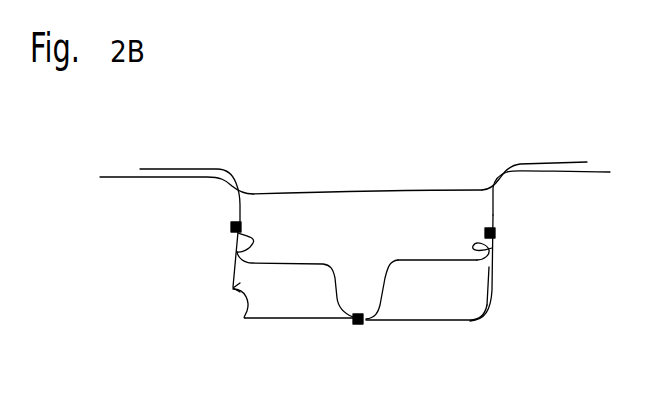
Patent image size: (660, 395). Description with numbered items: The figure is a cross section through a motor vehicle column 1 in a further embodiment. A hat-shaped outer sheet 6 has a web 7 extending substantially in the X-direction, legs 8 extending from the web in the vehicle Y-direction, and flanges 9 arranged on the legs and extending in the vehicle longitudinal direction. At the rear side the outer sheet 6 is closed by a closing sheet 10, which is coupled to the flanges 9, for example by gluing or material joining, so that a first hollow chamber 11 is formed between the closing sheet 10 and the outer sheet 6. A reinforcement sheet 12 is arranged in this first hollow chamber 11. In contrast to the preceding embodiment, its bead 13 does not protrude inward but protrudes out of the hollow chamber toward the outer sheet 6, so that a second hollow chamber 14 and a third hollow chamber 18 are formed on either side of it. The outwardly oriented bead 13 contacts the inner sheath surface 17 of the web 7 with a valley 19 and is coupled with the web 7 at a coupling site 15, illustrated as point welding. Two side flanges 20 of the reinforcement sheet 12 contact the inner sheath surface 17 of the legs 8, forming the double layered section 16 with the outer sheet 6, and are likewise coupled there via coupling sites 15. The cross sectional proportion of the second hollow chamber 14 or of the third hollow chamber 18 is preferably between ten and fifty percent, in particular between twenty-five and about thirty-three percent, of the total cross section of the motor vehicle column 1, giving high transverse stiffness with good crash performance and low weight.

The motor vehicle column 1 is at (213, 87).
The outer sheet 6 is at (232, 318).
The web 7 is at (428, 322).
The legs 8 is at (236, 273).
The flanges 9 is at (128, 177).
The closing sheet 10 is at (315, 193).
The first hollow chamber 11 is at (348, 227).
The reinforcement sheet 12 is at (292, 261).
The bead 13 is at (373, 313).
The second hollow chamber 14 is at (290, 295).
The coupling sites 15 is at (231, 226).
The double layered section 16 is at (232, 248).
The inner sheath surface 17 is at (242, 323).
The third hollow chamber 18 is at (440, 300).
The valley 19 is at (354, 307).
The side flanges 20 is at (237, 250).